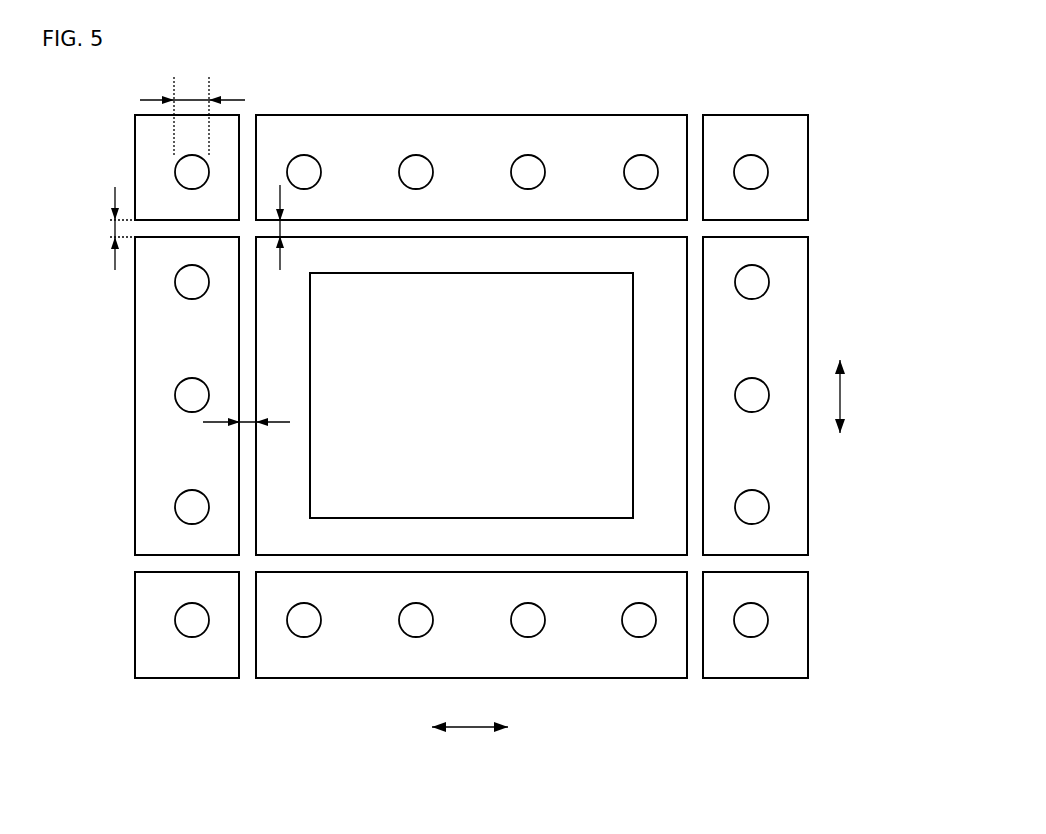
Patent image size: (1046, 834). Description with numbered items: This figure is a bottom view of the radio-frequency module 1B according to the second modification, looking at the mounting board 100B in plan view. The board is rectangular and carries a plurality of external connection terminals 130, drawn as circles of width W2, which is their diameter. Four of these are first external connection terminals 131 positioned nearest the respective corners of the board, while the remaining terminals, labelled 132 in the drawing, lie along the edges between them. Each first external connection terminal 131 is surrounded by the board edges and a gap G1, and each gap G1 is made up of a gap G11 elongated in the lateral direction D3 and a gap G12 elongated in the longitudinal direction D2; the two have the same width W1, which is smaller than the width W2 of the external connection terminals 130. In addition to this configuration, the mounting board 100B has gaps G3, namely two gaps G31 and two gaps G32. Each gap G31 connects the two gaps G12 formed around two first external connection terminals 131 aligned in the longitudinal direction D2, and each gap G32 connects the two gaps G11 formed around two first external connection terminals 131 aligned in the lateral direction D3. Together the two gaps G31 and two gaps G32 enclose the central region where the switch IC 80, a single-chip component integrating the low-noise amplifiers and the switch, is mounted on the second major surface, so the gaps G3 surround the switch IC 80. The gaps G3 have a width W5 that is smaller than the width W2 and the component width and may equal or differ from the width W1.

The radio-frequency module 1B is at (813, 97).
The mounting board 100B is at (809, 130).
The external connection terminals 130 is at (467, 394).
The first external connection terminals 131 is at (467, 407).
The second holes 132 is at (823, 623).
The switch IC 80 is at (522, 286).
The gap G1 is at (212, 230).
The gap G11 is at (248, 137).
The gap G12 is at (158, 227).
The gaps G3 is at (474, 399).
The gaps G31 is at (473, 411).
The gaps G32 is at (722, 435).
The width of gap G1 W1 is at (109, 228).
The width of external connection terminals W2 is at (192, 115).
The width of gaps G3 W5 is at (265, 305).
The longitudinal direction D2 is at (470, 717).
The lateral direction D3 is at (855, 396).